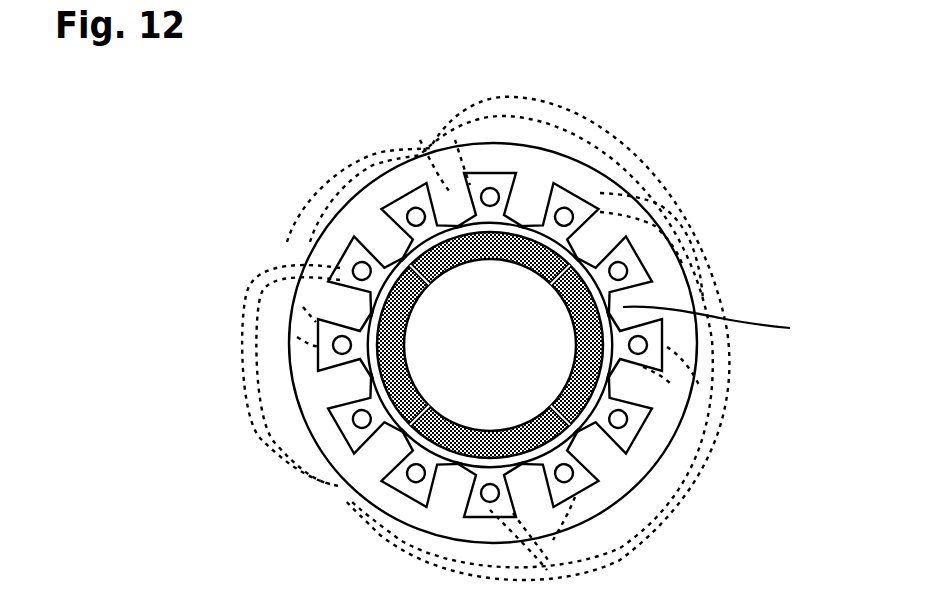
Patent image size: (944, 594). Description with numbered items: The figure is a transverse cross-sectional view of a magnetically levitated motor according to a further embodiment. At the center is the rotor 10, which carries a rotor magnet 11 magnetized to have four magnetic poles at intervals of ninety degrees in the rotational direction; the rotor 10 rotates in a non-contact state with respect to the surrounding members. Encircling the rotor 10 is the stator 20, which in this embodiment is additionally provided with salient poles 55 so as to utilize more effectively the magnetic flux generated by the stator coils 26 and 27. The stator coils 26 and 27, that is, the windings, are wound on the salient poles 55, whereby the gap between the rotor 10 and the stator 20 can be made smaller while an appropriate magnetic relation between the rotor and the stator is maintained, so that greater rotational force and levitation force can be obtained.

The rotor 10 is at (413, 242).
The rotor magnet 11 is at (395, 376).
The stator 20 is at (680, 190).
The stator coil 26 is at (383, 156).
The stator coil 27 is at (245, 338).
The salient pole 55 is at (724, 325).